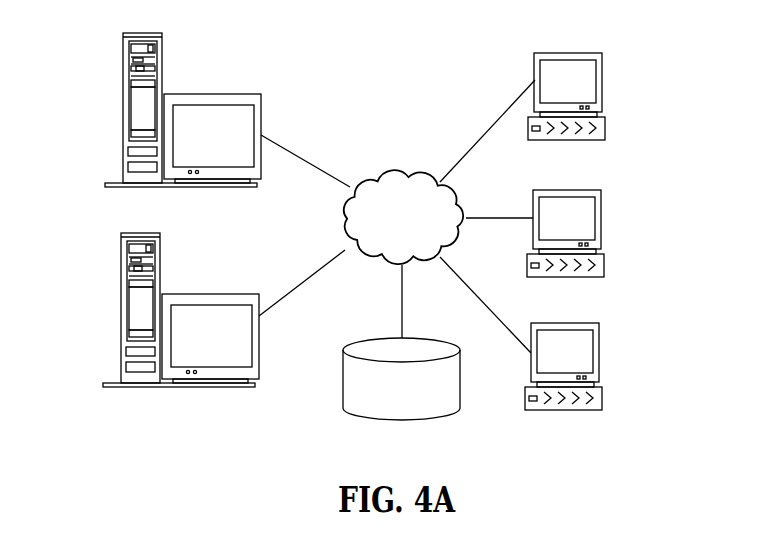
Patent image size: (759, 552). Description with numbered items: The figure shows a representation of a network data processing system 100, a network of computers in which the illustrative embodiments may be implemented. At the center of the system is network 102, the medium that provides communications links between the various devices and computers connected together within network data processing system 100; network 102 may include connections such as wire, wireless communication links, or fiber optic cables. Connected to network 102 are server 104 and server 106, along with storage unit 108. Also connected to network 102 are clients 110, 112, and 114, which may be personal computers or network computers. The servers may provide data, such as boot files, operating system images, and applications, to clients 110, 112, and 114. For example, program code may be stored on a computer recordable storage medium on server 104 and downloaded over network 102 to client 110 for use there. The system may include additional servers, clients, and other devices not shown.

The network data processing system 100 is at (451, 72).
The network 102 is at (378, 173).
The server 104 is at (122, 107).
The server 106 is at (120, 307).
The storage unit 108 is at (343, 388).
The client 110 is at (603, 82).
The client 112 is at (602, 220).
The client 114 is at (599, 355).